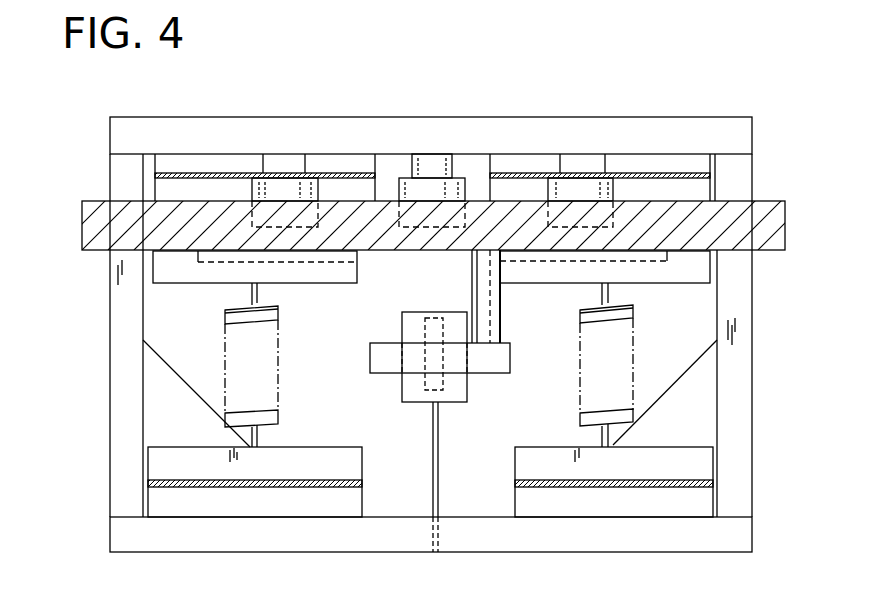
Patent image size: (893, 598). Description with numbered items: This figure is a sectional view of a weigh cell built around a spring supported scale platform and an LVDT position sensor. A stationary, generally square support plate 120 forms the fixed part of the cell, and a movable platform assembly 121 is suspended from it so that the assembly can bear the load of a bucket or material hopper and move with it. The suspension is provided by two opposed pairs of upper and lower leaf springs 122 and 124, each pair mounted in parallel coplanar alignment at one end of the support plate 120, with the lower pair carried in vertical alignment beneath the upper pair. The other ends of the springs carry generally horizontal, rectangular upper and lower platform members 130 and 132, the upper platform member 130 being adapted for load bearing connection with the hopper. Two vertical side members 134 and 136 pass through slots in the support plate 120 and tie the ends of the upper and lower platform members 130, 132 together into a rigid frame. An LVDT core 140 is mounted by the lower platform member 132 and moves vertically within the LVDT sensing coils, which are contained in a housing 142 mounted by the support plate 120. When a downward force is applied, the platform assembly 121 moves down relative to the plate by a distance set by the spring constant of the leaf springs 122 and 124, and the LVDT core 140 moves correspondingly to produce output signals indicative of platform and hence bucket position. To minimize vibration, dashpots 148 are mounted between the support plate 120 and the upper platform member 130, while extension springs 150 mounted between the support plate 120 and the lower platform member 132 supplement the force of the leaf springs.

The support plate 120 is at (102, 243).
The movable platform assembly 121 is at (434, 334).
The upper leaf springs 122 is at (241, 173).
The lower leaf springs 124 is at (362, 452).
The upper platform member 130 is at (185, 132).
The lower platform member 132 is at (182, 540).
The vertical side member 134 is at (745, 300).
The vertical side member 136 is at (110, 381).
The LVDT core 140 is at (433, 386).
The housing 142 is at (420, 315).
The dashpots 148 is at (291, 190).
The extension springs 150 is at (280, 318).